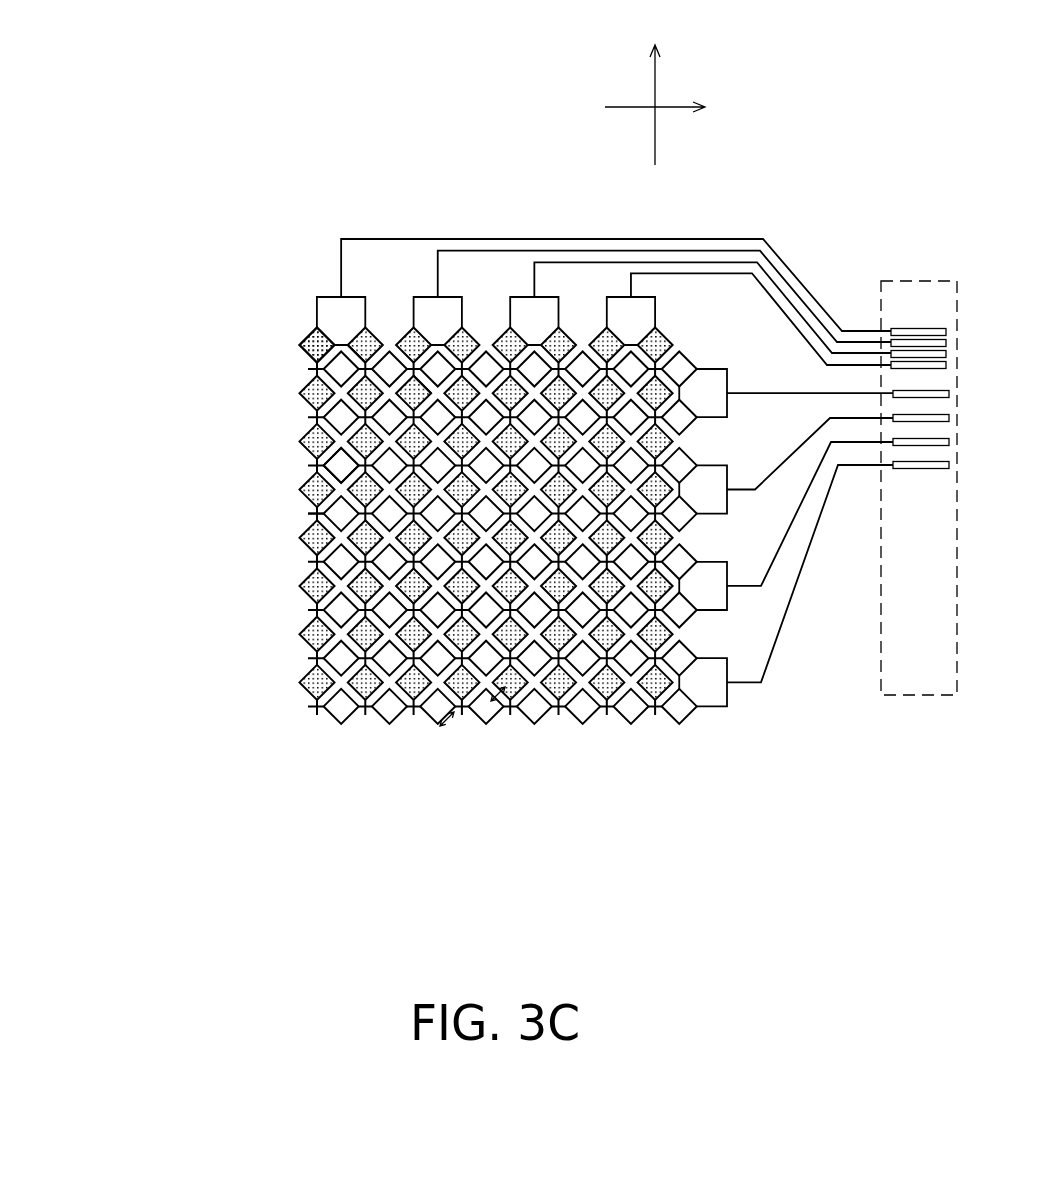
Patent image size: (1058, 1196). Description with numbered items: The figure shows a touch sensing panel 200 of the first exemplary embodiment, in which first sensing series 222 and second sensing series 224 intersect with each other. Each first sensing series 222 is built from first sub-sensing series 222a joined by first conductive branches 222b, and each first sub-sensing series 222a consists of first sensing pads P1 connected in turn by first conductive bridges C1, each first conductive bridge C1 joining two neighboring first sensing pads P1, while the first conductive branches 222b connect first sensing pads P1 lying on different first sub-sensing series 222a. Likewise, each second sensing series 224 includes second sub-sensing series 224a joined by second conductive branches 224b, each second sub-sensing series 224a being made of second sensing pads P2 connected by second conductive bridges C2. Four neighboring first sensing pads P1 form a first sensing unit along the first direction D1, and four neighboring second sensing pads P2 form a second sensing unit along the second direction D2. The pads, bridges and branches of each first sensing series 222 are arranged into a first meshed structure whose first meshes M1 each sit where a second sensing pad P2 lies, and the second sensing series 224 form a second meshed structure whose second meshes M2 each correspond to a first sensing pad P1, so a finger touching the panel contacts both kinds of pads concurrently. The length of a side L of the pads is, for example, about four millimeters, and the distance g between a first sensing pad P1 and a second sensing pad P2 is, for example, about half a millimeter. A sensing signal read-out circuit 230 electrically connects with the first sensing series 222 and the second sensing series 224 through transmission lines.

The touch sensing panel 200 is at (109, 387).
The first sensing series 222 is at (172, 348).
The first sub-sensing series 222a is at (243, 338).
The first conductive branch 222b is at (306, 420).
The second sensing series 224 is at (172, 473).
The second sub-sensing series 224a is at (243, 460).
The second conductive branch 224b is at (307, 544).
The first sensing pad P1 is at (301, 349).
The first conductive bridge C1 is at (310, 372).
The second sensing pad P2 is at (306, 452).
The second conductive bridge C2 is at (306, 508).
The first mesh M1 is at (352, 345).
The second mesh M2 is at (424, 374).
The length of a side L is at (447, 722).
The distance g is at (503, 703).
The sensing signal read-out circuit 230 is at (930, 280).
The first direction D1 is at (653, 88).
The second direction D2 is at (671, 108).